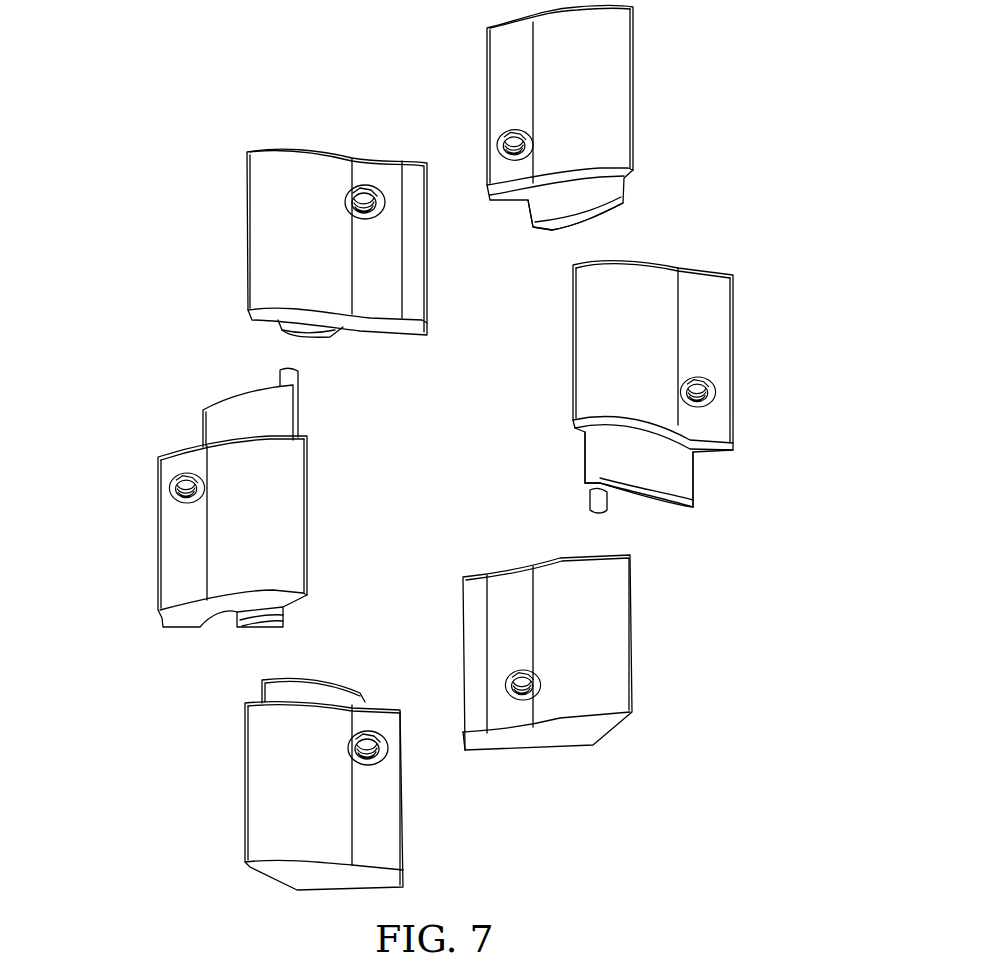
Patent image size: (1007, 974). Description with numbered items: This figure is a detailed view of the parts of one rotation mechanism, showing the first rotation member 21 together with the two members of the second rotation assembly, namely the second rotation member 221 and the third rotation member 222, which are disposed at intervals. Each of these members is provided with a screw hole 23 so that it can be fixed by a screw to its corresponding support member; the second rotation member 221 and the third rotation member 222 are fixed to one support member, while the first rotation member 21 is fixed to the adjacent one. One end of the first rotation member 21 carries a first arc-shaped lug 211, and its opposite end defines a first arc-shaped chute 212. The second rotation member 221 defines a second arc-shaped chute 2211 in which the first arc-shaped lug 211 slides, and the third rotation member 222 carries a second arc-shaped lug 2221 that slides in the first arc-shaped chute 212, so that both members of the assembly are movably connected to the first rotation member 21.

The first rotation member 21 is at (650, 318).
The first arc-shaped lug 211 is at (627, 460).
The first arc-shaped chute 212 is at (221, 620).
The second rotation member 221 is at (434, 404).
The second arc-shaped chute 2211 is at (343, 334).
The third rotation member 222 is at (573, 63).
The second arc-shaped lug 2221 is at (577, 195).
The screw hole 23 is at (367, 183).